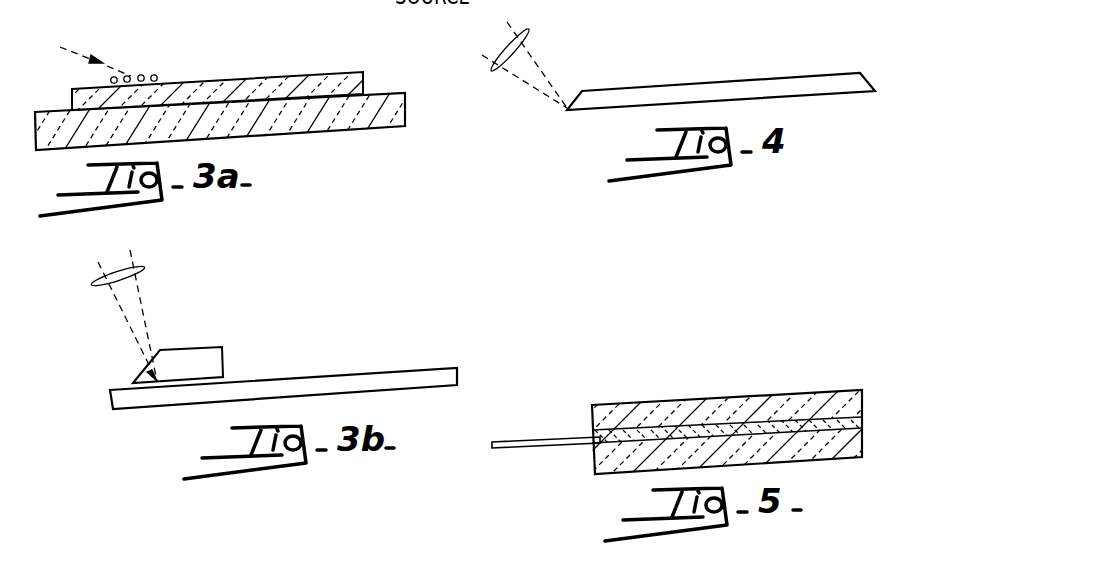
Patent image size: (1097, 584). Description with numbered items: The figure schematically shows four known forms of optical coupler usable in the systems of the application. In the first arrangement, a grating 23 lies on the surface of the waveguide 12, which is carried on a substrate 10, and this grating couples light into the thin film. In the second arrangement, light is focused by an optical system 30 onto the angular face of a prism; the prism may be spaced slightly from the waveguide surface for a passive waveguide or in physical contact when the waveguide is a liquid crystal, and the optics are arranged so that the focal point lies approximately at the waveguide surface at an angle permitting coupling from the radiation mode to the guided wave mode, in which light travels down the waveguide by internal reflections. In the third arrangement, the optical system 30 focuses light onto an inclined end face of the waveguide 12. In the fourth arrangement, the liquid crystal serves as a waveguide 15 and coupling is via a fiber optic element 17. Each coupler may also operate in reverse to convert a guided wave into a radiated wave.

In FIG. 3A, the substrate 10 is at (347, 131).
In FIG. 3A, the waveguide 12 is at (266, 73).
In FIG. 4, the waveguide 12 is at (708, 82).
In FIG. 3A, the grating 23 is at (108, 64).
In FIG. 3B, the optical system 30 is at (146, 268).
In FIG. 4, the optical system 30 is at (528, 32).
In FIG. 5, the waveguide 15 is at (870, 408).
In FIG. 5, the fiber optic element 17 is at (542, 438).